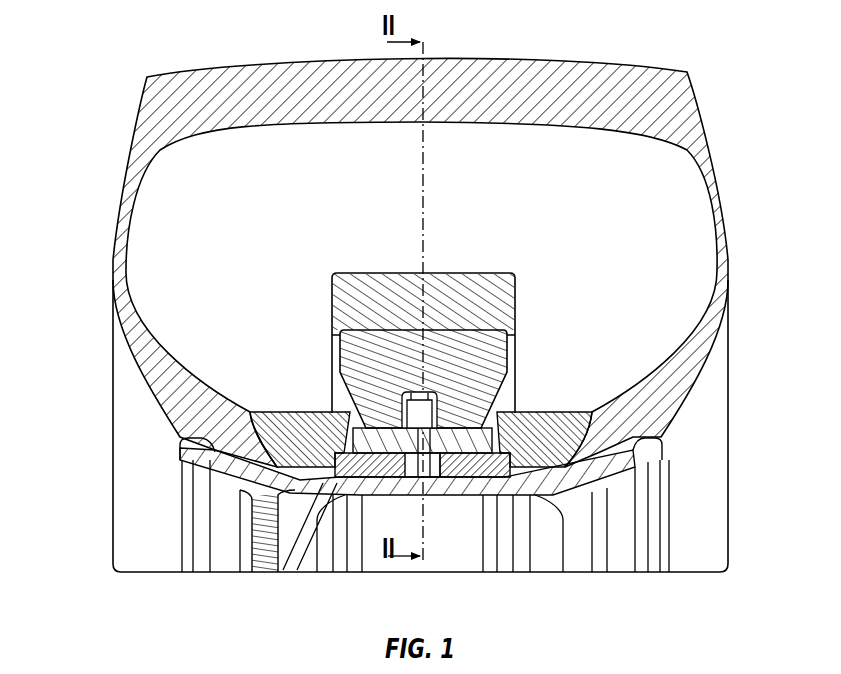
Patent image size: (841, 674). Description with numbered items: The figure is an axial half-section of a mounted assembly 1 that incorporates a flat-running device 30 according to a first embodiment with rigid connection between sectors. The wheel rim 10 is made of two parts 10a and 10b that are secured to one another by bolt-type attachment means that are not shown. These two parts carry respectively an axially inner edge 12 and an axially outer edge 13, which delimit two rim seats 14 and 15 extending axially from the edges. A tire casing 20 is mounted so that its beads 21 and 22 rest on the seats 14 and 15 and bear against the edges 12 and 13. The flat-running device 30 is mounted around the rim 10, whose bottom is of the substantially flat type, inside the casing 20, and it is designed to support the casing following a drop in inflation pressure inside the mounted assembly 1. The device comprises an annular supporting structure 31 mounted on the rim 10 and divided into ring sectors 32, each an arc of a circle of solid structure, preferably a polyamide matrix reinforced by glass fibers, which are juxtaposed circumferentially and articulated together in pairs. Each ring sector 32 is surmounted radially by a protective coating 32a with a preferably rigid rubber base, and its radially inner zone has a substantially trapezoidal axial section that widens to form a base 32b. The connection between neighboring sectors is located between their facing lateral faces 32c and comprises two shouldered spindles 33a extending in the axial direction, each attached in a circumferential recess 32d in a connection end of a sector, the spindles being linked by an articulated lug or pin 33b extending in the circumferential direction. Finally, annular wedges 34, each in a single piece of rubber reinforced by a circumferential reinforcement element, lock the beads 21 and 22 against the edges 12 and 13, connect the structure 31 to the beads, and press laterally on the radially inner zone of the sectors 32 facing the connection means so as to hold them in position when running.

The mounted assembly 1 is at (62, 513).
The wheel rim 10 is at (508, 515).
The first rim part 10a is at (580, 498).
The second rim part 10b is at (263, 548).
The axially inner edge 12 is at (668, 442).
The axially outer edge 13 is at (185, 445).
The rim seat 14 is at (612, 470).
The rim seat 15 is at (233, 476).
The tire casing 20 is at (500, 55).
The bead 21 is at (668, 393).
The bead 22 is at (180, 415).
The flat-running device 30 is at (555, 232).
The annular supporting structure 31 is at (520, 315).
The ring sector 32 is at (517, 351).
The protective coating 32a is at (388, 270).
The base 32b is at (510, 480).
The lateral face 32c is at (330, 388).
The circumferential recess 32d is at (415, 470).
The spindle 33a is at (468, 440).
The articulated lug or pin 33b is at (432, 462).
The annular wedge 34 is at (282, 410).